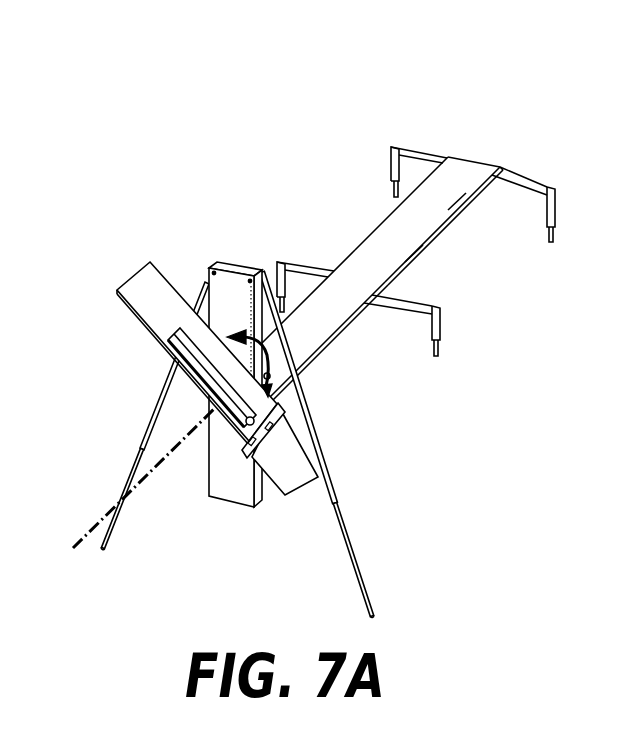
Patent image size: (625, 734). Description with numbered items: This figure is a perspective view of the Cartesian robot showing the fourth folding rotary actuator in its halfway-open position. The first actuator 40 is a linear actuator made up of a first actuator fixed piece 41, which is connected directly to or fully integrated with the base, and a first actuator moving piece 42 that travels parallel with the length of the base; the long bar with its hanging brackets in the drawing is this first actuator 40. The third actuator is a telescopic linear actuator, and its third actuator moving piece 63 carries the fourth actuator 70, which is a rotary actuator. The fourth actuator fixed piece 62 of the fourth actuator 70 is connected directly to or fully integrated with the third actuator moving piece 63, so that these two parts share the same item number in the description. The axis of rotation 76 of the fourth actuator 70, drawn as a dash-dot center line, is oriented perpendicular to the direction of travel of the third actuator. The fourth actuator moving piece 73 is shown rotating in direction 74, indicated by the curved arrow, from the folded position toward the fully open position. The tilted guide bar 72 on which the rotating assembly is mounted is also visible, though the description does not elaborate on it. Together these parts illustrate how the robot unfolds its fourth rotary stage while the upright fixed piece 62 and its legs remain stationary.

The first actuator 40 is at (408, 237).
The first actuator fixed piece 41 is at (470, 174).
The first actuator moving piece 42 is at (343, 305).
The fourth actuator fixed piece 62 is at (233, 280).
The third actuator moving piece 63 is at (268, 375).
The fourth actuator 70 is at (266, 384).
The guide bar 72 is at (134, 307).
The fourth actuator moving piece 73 is at (268, 398).
The direction of rotation 74 is at (265, 342).
The axis of rotation 76 is at (184, 446).